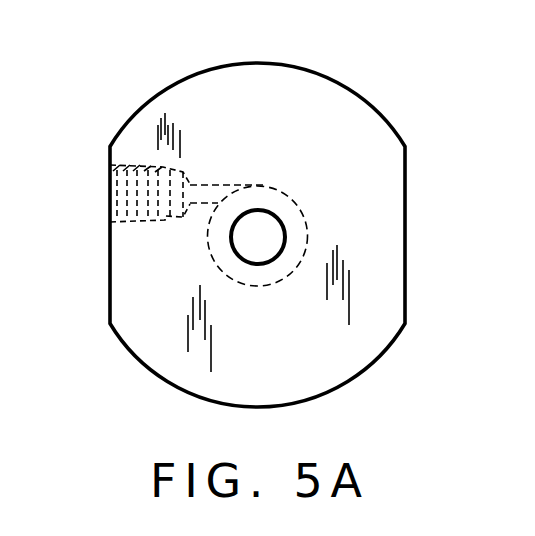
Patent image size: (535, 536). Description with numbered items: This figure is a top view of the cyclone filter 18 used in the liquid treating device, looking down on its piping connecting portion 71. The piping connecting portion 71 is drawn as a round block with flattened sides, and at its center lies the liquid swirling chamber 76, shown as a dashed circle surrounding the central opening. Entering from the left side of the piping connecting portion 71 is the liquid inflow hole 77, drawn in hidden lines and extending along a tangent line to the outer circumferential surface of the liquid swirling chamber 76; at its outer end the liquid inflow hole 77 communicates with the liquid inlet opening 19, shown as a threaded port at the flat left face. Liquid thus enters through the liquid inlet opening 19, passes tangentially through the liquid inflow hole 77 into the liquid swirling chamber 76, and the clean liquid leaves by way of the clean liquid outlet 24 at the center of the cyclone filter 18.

The cyclone filter 18 is at (363, 95).
The liquid inlet opening 19 is at (110, 184).
The clean liquid outlet 24 is at (268, 237).
The piping connecting portion 71 is at (380, 262).
The liquid swirling chamber 76 is at (274, 194).
The liquid inflow hole 77 is at (208, 184).